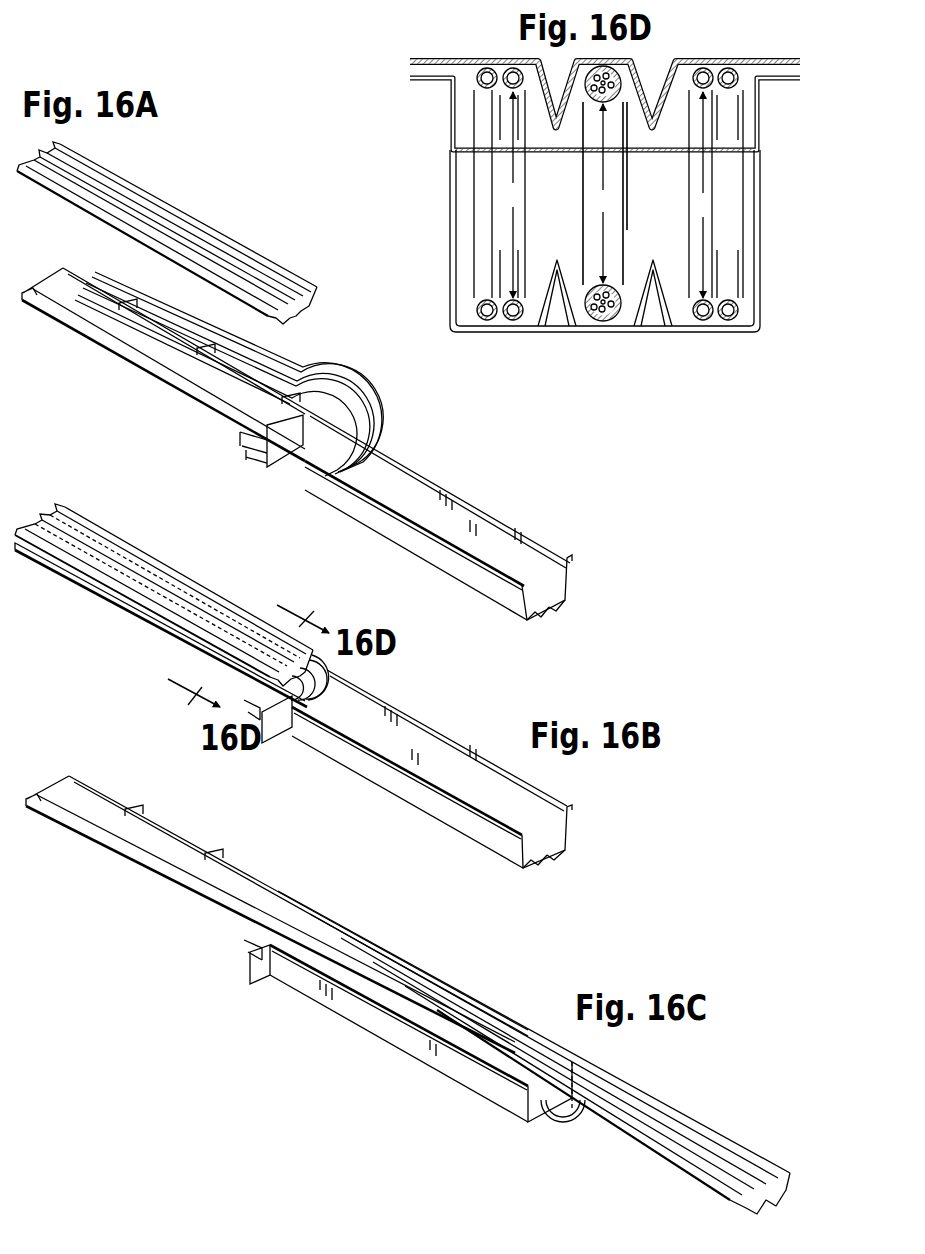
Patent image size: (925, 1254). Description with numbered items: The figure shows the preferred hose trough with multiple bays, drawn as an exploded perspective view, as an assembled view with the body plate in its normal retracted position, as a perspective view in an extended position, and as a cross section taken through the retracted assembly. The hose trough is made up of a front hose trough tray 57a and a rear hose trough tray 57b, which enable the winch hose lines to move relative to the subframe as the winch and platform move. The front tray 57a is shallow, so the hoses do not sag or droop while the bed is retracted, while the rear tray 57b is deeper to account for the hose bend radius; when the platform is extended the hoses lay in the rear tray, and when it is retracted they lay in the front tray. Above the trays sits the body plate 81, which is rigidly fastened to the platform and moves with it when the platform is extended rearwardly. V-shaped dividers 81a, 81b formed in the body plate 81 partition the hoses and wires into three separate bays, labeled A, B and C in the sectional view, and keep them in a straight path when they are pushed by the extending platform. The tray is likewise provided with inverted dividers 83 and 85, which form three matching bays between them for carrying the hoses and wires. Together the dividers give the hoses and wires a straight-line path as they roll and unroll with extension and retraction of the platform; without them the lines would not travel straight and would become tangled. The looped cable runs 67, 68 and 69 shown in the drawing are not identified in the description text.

In FIG. 16D, the body plate 81 is at (733, 57).
In FIG. 16A, the body plate 81 is at (200, 244).
In FIG. 16B, the body plate 81 is at (168, 596).
In FIG. 16C, the body plate 81 is at (731, 1131).
In FIG. 16D, the V-shaped divider 81a is at (666, 114).
In FIG. 16A, the V-shaped divider 81a is at (309, 299).
In FIG. 16D, the V-shaped divider 81b is at (548, 112).
In FIG. 16A, the V-shaped divider 81b is at (297, 318).
In FIG. 16D, the front hose trough tray 57a is at (762, 195).
In FIG. 16A, the front hose trough tray 57a is at (483, 581).
In FIG. 16B, the front hose trough tray 57a is at (432, 718).
In FIG. 16C, the front hose trough tray 57a is at (381, 1021).
In FIG. 16D, the rear hose trough tray 57b is at (764, 106).
In FIG. 16A, the rear hose trough tray 57b is at (100, 346).
In FIG. 16B, the rear hose trough tray 57b is at (129, 624).
In FIG. 16C, the rear hose trough tray 57b is at (175, 888).
In FIG. 16D, the first flat cable 67 is at (483, 243).
In FIG. 16A, the first flat cable 67 is at (334, 437).
In FIG. 16B, the first flat cable 67 is at (297, 688).
In FIG. 16C, the first flat cable 67 is at (549, 1134).
In FIG. 16D, the cable bundle 68 is at (628, 322).
In FIG. 16A, the cable bundle 68 is at (367, 433).
In FIG. 16B, the cable bundle 68 is at (321, 702).
In FIG. 16D, the second flat cable 69 is at (731, 244).
In FIG. 16A, the second flat cable 69 is at (379, 398).
In FIG. 16B, the second flat cable 69 is at (334, 670).
In FIG. 16D, the inverted divider 83 is at (545, 288).
In FIG. 16A, the inverted divider 83 is at (531, 621).
In FIG. 16B, the inverted divider 83 is at (529, 871).
In FIG. 16C, the inverted divider 83 is at (747, 1205).
In FIG. 16D, the inverted divider 85 is at (668, 288).
In FIG. 16A, the inverted divider 85 is at (548, 587).
In FIG. 16B, the inverted divider 85 is at (562, 849).
In FIG. 16C, the inverted divider 85 is at (781, 1189).